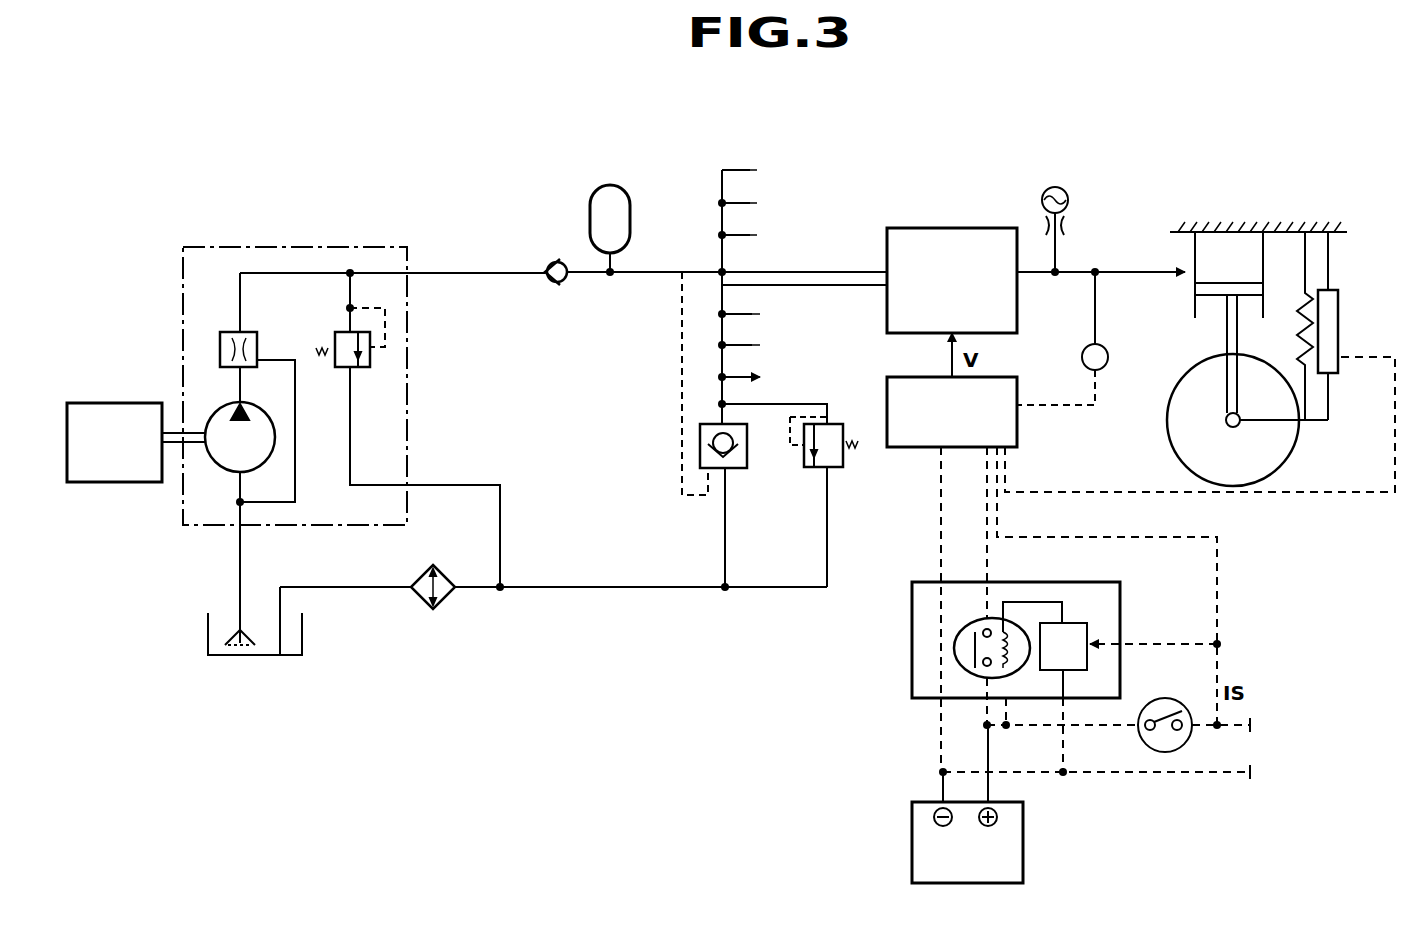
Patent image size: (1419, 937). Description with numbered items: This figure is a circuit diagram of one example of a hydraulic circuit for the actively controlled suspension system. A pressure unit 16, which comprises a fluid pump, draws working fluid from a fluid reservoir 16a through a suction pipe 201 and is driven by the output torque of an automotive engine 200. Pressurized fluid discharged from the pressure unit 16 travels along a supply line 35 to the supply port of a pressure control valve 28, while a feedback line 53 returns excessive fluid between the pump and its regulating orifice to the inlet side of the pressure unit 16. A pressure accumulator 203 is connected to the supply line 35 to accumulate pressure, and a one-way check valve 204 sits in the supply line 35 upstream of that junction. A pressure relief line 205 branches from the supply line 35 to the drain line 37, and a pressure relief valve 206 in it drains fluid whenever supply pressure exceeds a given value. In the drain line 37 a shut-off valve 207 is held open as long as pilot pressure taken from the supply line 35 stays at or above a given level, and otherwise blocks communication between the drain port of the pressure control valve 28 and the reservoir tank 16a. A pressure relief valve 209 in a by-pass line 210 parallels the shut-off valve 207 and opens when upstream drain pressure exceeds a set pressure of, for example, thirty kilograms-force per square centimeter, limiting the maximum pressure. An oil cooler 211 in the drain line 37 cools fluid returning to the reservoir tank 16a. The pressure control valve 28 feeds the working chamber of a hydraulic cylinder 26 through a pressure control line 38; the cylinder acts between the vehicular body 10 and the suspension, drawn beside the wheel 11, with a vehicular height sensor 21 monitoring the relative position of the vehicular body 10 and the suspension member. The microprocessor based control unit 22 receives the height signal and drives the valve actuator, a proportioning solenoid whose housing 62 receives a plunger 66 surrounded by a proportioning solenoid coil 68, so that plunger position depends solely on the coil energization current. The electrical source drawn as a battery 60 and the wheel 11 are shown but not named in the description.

The vehicular body 10 is at (1263, 225).
The wheel 11 is at (1233, 487).
The pressure unit 16 is at (210, 473).
The fluid reservoir 16a is at (207, 632).
The vehicular height sensor 21 is at (1340, 305).
The control unit 22 is at (887, 390).
The hydraulic cylinder 26 is at (1195, 283).
The pressure control valve 28 is at (943, 227).
The supply line 35 is at (442, 272).
The drain line 37 is at (650, 590).
The pressure control line 38 is at (1045, 278).
The feedback line 53 is at (296, 403).
The battery 60 is at (1023, 815).
The housing 62 is at (1120, 590).
The plunger 66 is at (955, 650).
The proportioning solenoid coil 68 is at (1005, 638).
The automotive engine 200 is at (110, 403).
The suction pipe 201 is at (242, 565).
The pressure accumulator 203 is at (630, 200).
The one-way check valve 204 is at (548, 262).
The pressure relief line 205 is at (352, 438).
The pressure relief valve 206 is at (372, 360).
The shut-off valve 207 is at (700, 460).
The pressure relief valve 209 is at (843, 470).
The by-pass line 210 is at (827, 523).
The oil cooler 211 is at (450, 600).